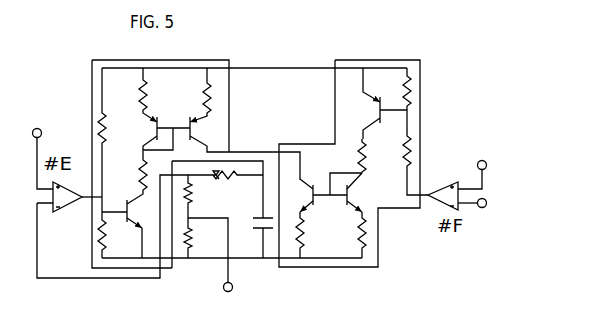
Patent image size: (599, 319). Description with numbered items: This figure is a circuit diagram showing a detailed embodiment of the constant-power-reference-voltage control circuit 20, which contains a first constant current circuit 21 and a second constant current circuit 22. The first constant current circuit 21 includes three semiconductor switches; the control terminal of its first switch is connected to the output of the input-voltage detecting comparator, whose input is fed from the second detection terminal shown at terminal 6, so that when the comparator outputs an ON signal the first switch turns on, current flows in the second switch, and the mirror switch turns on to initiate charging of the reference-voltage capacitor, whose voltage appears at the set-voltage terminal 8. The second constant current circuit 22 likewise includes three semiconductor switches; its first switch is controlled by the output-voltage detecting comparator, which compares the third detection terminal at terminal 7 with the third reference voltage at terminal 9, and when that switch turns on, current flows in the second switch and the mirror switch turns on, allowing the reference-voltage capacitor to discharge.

The second sense terminal (SENS2) 6 is at (39, 134).
The third sense terminal (SENS3) 7 is at (490, 149).
The set voltage terminal (Vset) 8 is at (220, 267).
The third reference terminal (Ref3) 9 is at (487, 228).
The constant-power-reference-voltage control circuit 20 is at (260, 188).
The first constant current circuit 21 is at (222, 82).
The second constant current circuit 22 is at (342, 138).